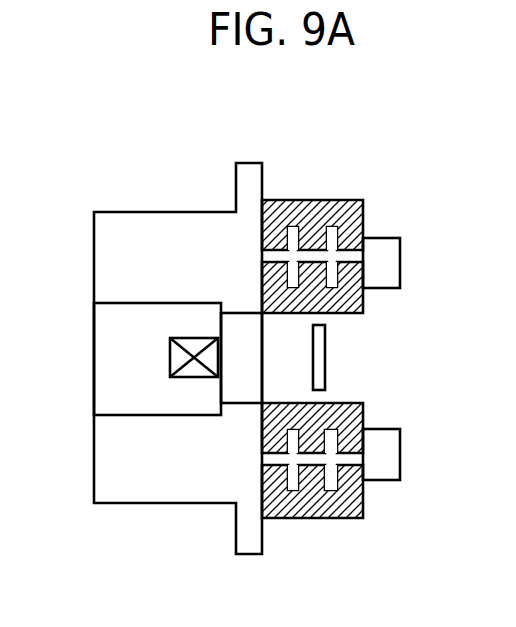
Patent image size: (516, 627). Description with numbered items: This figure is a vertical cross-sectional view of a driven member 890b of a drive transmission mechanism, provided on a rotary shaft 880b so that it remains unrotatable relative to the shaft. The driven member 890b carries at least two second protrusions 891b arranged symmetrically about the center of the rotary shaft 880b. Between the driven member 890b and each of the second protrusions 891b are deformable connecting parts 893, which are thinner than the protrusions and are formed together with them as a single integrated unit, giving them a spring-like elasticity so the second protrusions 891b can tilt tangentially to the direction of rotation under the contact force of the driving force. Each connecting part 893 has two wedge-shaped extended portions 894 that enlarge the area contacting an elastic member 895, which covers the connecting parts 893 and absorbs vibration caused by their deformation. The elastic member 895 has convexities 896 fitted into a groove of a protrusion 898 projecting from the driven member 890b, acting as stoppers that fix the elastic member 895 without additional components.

The rotary shaft 880b is at (102, 355).
The driven member 890b is at (172, 218).
The second protrusions 891b is at (392, 262).
The deformable connecting parts 893 is at (350, 257).
The wedge-shaped extended portions 894 is at (330, 232).
The elastic member 895 is at (272, 205).
The convexities 896 is at (318, 398).
The protrusion 898 is at (352, 392).